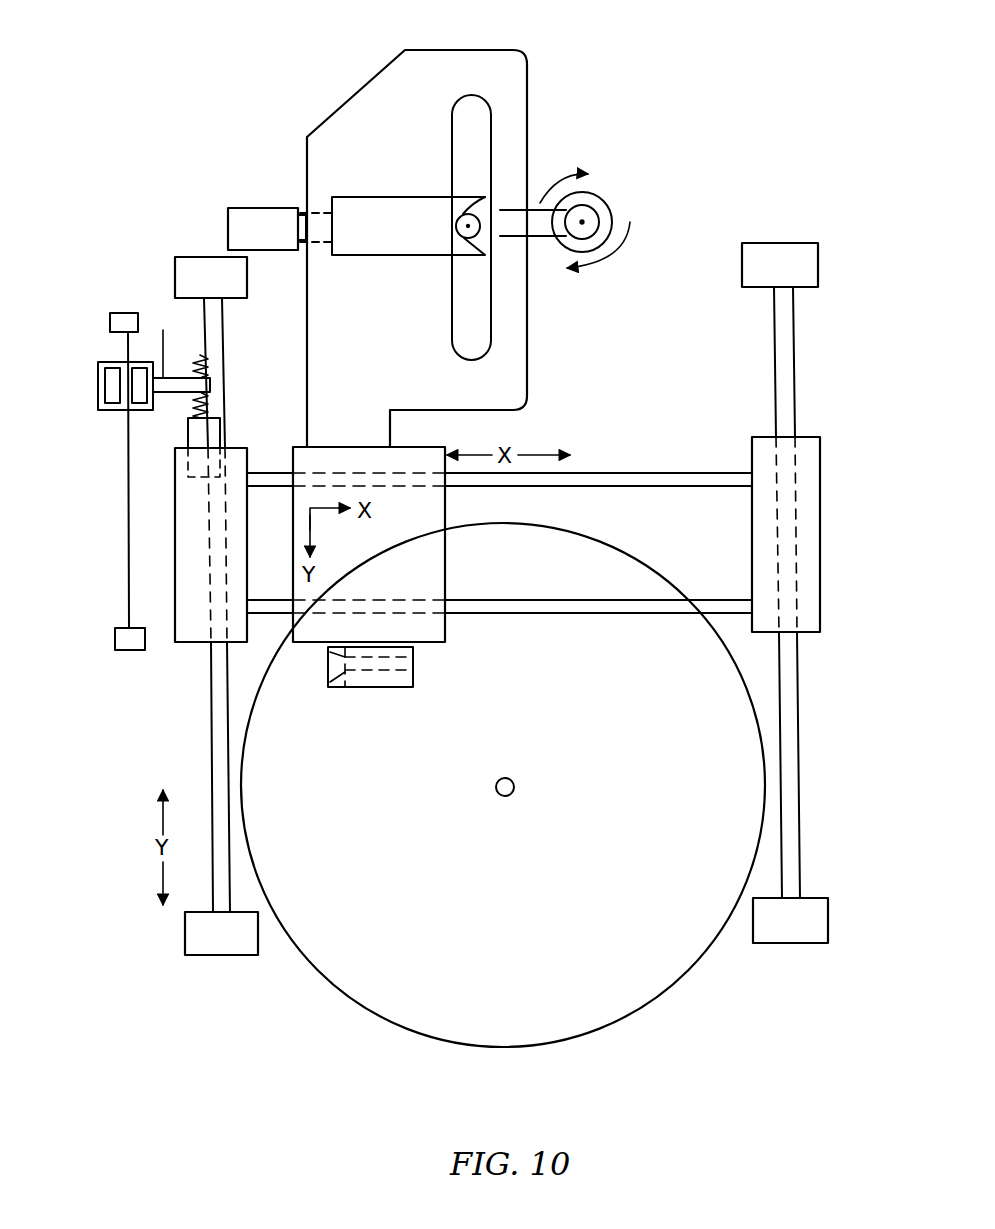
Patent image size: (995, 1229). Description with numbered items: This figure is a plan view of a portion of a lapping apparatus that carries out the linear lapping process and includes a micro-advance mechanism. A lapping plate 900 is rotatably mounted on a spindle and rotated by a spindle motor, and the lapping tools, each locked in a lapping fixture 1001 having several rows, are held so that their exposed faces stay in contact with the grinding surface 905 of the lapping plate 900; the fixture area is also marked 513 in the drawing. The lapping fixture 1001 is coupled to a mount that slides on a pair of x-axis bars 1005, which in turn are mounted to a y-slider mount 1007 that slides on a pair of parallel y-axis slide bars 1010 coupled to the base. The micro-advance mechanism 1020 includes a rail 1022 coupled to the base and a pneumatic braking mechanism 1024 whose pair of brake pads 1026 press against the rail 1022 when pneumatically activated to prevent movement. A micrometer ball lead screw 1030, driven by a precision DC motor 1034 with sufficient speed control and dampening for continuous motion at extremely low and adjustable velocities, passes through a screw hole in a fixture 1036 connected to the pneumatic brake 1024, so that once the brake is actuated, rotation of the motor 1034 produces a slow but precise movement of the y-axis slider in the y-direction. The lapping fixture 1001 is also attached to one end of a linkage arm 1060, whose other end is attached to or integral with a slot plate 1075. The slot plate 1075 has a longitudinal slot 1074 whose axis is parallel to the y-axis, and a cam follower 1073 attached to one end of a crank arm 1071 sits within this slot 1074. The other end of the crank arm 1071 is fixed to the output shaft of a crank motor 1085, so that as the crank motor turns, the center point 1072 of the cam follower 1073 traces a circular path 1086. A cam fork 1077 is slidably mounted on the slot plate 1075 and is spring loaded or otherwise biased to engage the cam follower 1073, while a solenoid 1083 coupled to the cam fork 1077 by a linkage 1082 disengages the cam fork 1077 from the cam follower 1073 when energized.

The lapping plate 900 is at (312, 950).
The grinding surface 905 is at (476, 923).
The conditioner head 513 is at (340, 685).
The lapping fixture 1001 is at (413, 650).
The x-axis bars 1005 is at (727, 600).
The y-slider mount 1007 is at (185, 548).
The y-axis slide bars 1010 is at (214, 357).
The micro-advance mechanism 1020 is at (88, 338).
The rail 1022 is at (128, 503).
The pneumatic braking mechanism 1024 is at (98, 388).
The brake pads 1026 is at (140, 404).
The micrometer ball lead screw 1030 is at (203, 356).
The motor 1034 is at (205, 440).
The fixture 1036 is at (163, 330).
The linkage arm 1060 is at (350, 410).
The crank arm 1071 is at (531, 210).
The center point 1072 is at (460, 232).
The cam follower 1073 is at (462, 250).
The longitudinal slot 1074 is at (471, 100).
The slot plate 1075 is at (373, 95).
The cam fork 1077 is at (408, 205).
The linkage 1082 is at (303, 215).
The solenoid 1083 is at (250, 212).
The crank motor 1085 is at (597, 200).
The circular path 1086 is at (603, 268).